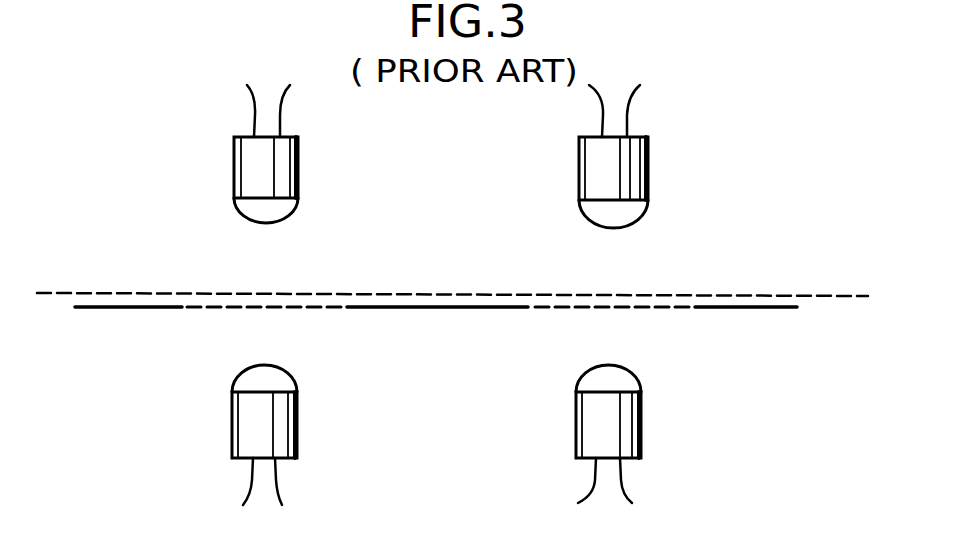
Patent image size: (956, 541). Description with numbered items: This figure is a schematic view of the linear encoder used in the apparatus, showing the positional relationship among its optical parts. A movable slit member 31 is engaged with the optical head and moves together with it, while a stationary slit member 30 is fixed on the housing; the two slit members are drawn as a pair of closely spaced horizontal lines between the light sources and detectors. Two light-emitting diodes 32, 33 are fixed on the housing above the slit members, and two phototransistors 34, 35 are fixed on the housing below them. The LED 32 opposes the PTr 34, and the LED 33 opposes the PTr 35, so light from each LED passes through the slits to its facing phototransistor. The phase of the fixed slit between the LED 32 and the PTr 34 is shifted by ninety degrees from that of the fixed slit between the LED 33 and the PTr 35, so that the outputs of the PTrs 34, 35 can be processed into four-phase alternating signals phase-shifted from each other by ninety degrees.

The stationary slit member 30 is at (759, 295).
The movable slit member 31 is at (750, 309).
The light-emitting diode 32 is at (298, 165).
The light-emitting diode 33 is at (648, 166).
The phototransistor 34 is at (297, 430).
The phototransistor 35 is at (641, 432).